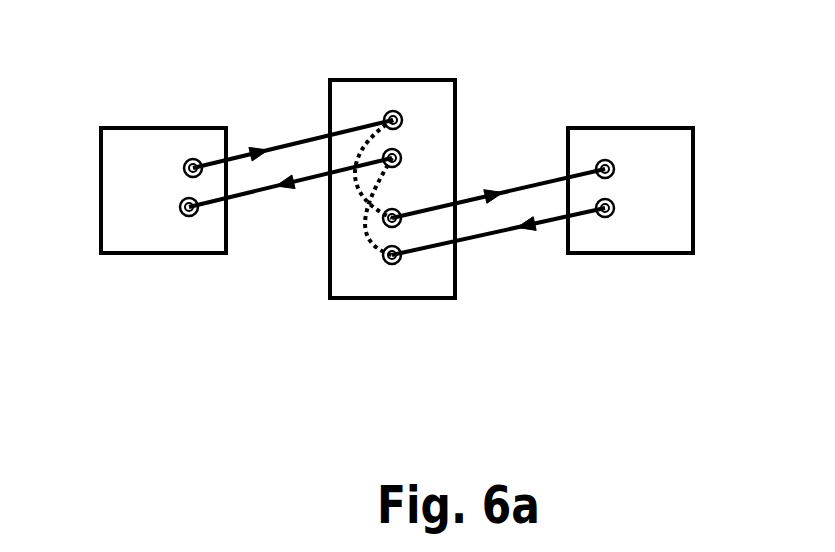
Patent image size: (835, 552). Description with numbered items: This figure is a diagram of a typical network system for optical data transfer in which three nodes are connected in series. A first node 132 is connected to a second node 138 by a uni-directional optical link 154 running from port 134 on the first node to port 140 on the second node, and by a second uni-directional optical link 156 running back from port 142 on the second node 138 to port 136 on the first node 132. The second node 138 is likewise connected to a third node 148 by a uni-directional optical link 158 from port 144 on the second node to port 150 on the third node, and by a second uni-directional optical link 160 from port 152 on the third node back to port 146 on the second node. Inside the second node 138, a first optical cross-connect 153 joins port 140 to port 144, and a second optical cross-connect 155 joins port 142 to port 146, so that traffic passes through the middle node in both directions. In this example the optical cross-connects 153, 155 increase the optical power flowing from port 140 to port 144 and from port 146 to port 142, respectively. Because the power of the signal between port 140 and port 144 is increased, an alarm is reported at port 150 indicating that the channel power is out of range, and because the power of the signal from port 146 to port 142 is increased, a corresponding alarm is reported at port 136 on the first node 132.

The first node 132 is at (100, 167).
The port 134 is at (187, 158).
The port 136 is at (187, 217).
The second node 138 is at (363, 78).
The port 140 is at (385, 117).
The port 142 is at (398, 155).
The port 144 is at (400, 208).
The port 146 is at (398, 262).
The third node 148 is at (693, 167).
The port 150 is at (611, 161).
The port 152 is at (610, 214).
The first optical cross-connect 153 is at (351, 188).
The uni-directional optical link 154 is at (297, 140).
The second optical cross-connect 155 is at (376, 244).
The second uni-directional optical link 156 is at (311, 178).
The uni-directional optical link 158 is at (517, 188).
The second uni-directional optical link 160 is at (494, 233).